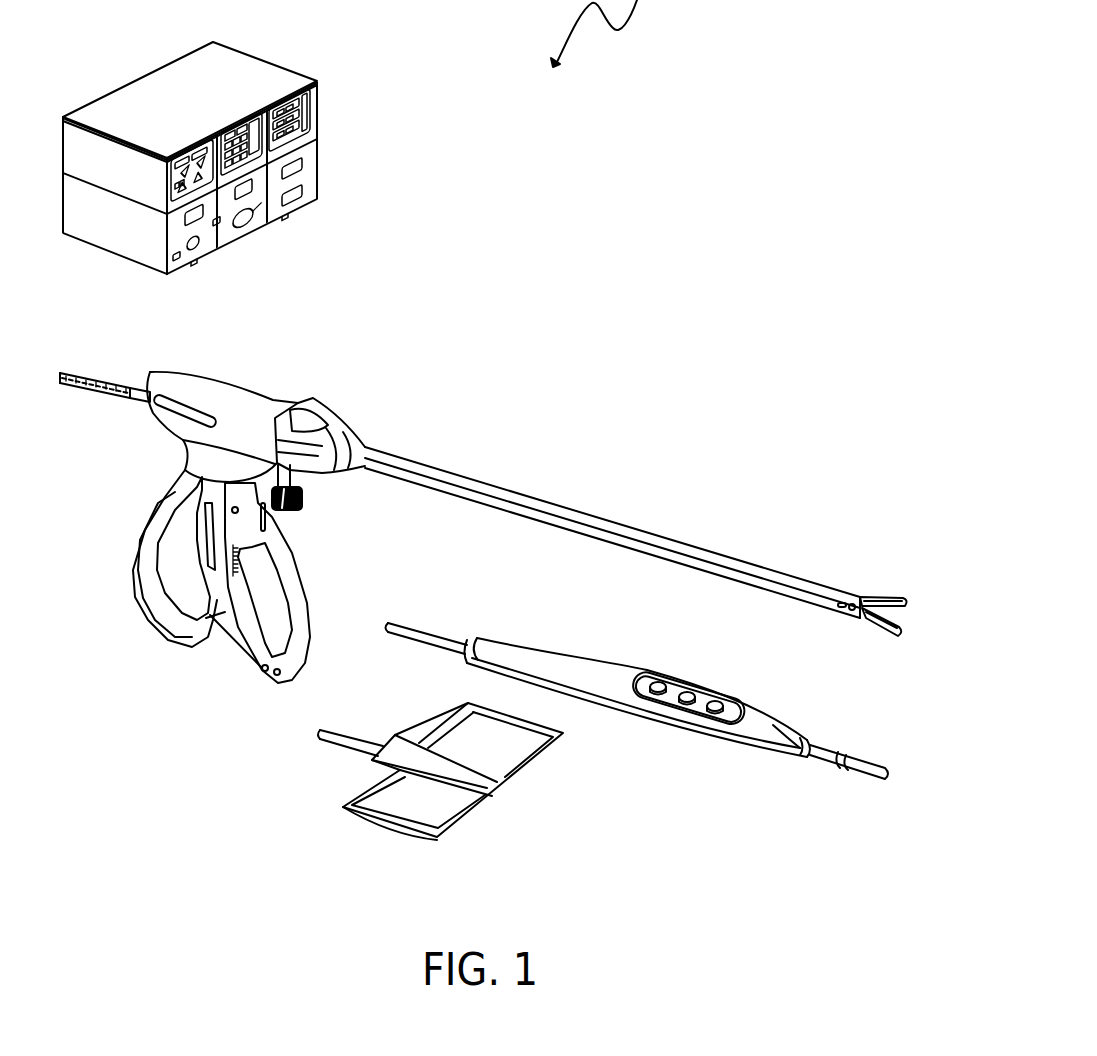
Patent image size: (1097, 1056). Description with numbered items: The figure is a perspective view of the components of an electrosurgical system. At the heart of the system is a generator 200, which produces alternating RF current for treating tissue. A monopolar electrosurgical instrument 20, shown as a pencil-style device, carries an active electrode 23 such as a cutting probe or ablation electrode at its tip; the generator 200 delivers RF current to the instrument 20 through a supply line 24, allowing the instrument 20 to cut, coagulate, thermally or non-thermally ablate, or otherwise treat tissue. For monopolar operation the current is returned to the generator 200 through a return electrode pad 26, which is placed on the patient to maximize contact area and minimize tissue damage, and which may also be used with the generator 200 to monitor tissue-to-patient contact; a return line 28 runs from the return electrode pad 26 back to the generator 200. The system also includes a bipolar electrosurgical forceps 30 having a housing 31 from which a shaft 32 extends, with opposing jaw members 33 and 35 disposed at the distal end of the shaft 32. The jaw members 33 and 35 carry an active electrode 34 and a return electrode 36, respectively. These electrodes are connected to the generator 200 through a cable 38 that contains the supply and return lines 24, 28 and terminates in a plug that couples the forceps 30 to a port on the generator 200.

The generator 200 is at (158, 57).
The bipolar electrosurgical forceps 30 is at (878, 526).
The housing 31 is at (233, 383).
The shaft 32 is at (609, 510).
The jaw member 33 is at (895, 596).
The active electrode 34 is at (905, 605).
The jaw member 35 is at (890, 637).
The return electrode 36 is at (903, 625).
The cable 38 is at (118, 378).
The monopolar electrosurgical instrument 20 is at (775, 712).
The active electrode 23 is at (860, 760).
The supply line 24 is at (87, 373).
The return electrode pad 26 is at (395, 830).
The return line 28 is at (350, 732).